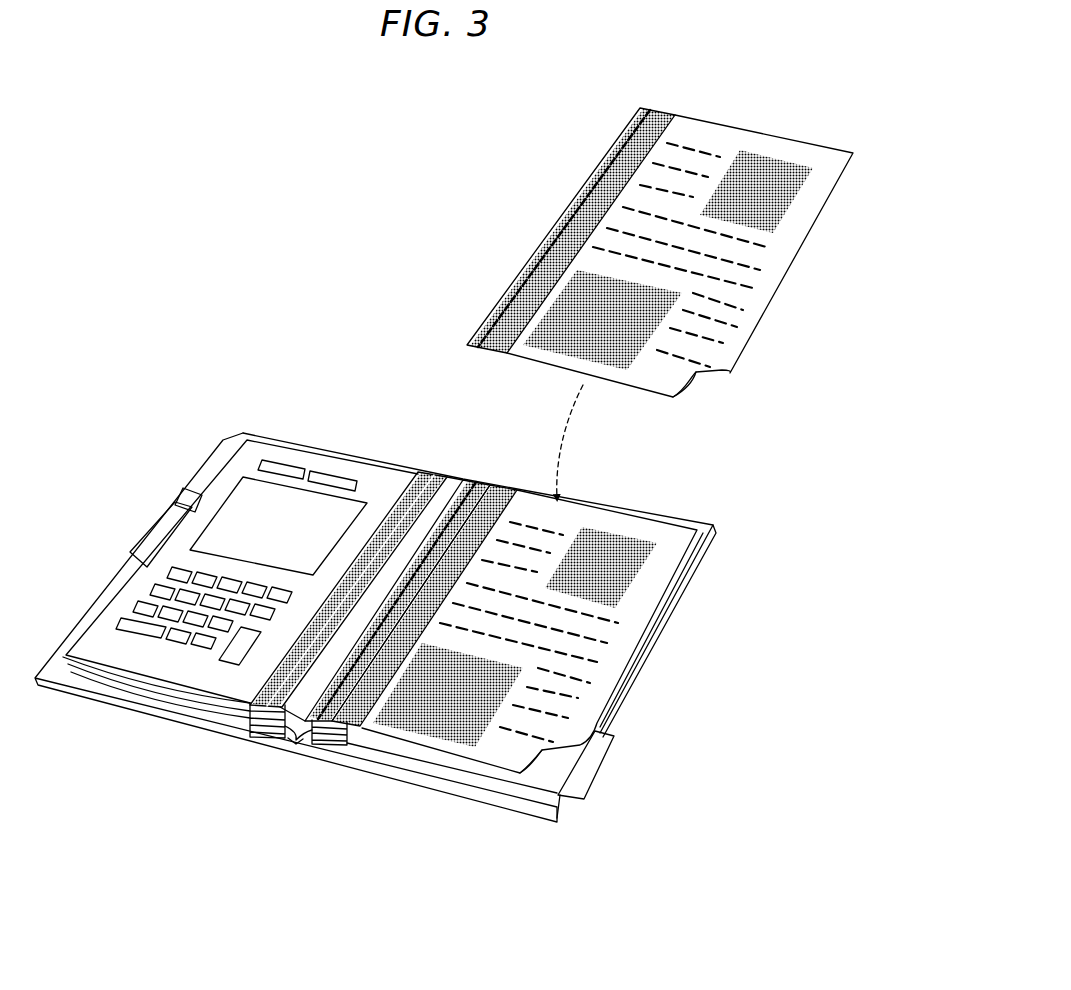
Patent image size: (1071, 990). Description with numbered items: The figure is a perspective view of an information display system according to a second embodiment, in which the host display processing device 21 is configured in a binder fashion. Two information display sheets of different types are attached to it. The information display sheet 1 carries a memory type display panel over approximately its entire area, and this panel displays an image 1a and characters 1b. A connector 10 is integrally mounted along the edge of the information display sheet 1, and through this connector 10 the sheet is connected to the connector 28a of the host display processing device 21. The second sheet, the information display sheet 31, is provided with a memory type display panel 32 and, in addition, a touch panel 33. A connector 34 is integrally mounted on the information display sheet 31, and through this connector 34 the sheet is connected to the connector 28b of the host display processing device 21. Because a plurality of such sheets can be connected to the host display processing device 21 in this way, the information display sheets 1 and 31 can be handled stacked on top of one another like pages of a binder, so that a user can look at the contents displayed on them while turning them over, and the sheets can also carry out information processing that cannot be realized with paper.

The information display sheet 1 is at (760, 325).
The image 1a is at (757, 172).
The characters 1b is at (698, 147).
The connector 10 is at (655, 108).
The host display processing device 21 is at (285, 754).
The connector 28a is at (486, 483).
The connector 28b is at (460, 478).
The information display sheet 31 is at (283, 453).
The memory type display panel 32 is at (243, 508).
The touch panel 33 is at (140, 602).
The connector 34 is at (403, 500).